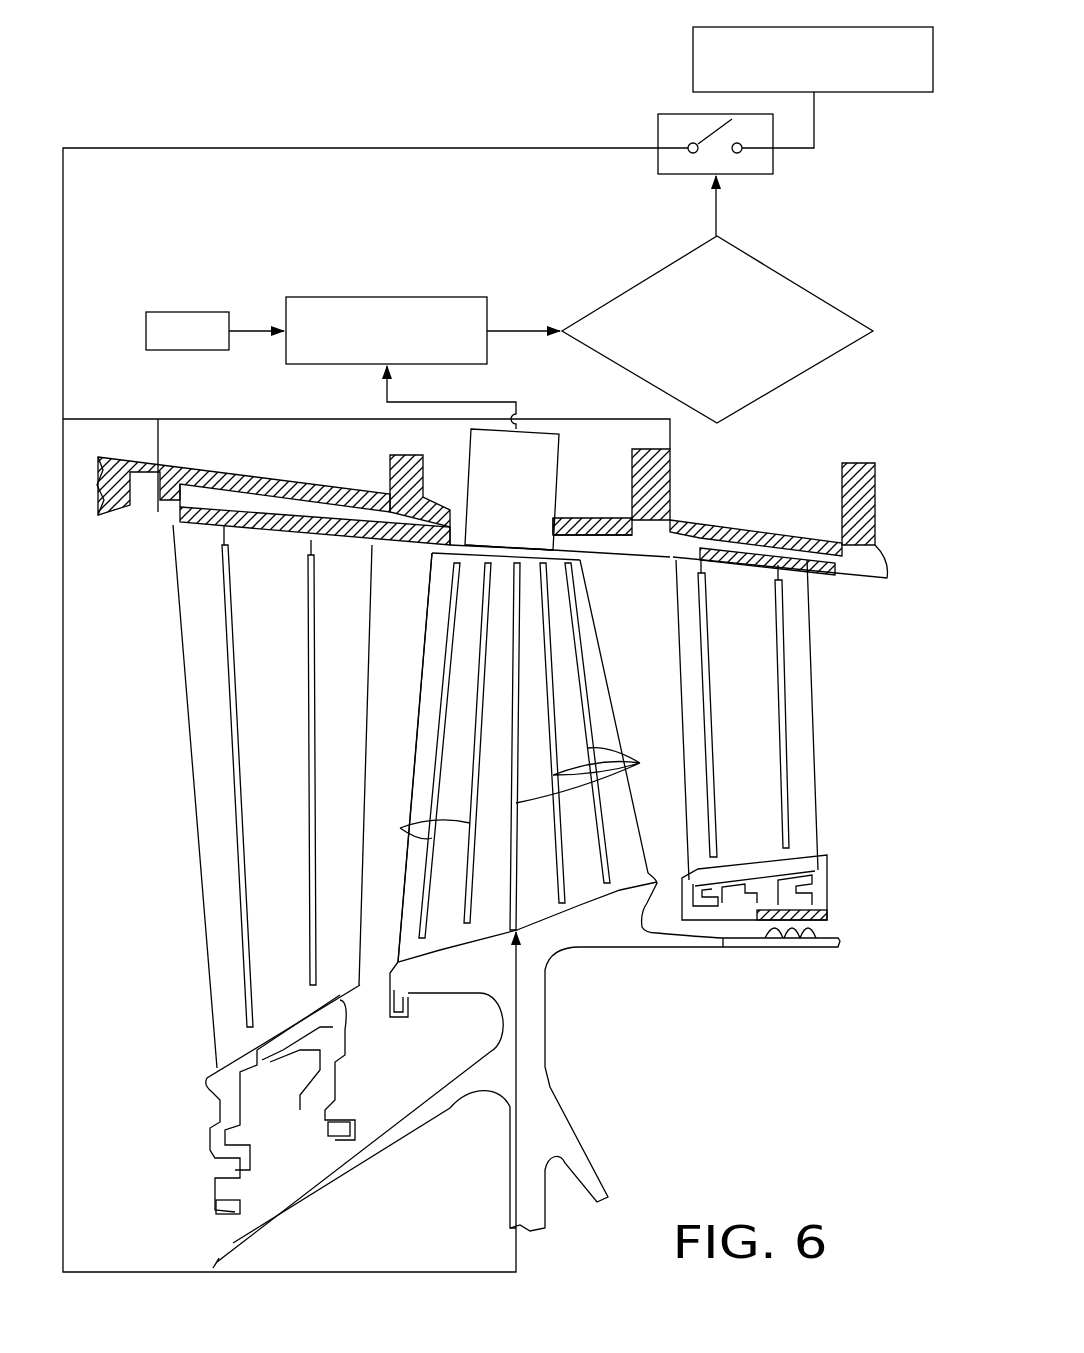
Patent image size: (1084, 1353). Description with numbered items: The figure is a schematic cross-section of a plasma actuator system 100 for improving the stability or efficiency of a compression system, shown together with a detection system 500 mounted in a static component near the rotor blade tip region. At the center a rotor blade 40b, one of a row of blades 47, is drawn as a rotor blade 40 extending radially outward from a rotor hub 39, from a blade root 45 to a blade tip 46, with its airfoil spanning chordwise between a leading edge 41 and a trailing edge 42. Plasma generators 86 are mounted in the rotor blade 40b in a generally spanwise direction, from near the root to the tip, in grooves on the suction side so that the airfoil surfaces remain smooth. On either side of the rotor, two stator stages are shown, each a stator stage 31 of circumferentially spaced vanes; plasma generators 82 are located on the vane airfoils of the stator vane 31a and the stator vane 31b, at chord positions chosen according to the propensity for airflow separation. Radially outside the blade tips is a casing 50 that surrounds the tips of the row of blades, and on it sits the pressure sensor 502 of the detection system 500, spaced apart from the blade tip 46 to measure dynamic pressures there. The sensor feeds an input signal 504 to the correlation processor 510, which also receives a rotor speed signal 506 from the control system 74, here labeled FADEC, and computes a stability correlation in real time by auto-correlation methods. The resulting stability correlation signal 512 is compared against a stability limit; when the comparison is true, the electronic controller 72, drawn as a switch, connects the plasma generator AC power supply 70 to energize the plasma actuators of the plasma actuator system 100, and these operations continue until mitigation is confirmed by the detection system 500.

The plasma actuator system 100 is at (220, 117).
The power supply 70 is at (693, 61).
The electronic controller 72 is at (765, 163).
The control system 74 is at (826, 240).
The stability correlation signal 512 is at (716, 212).
The correlation processor 510 is at (387, 297).
The rotor speed signal 506 is at (250, 327).
The input signal 504 is at (428, 402).
The detection system 500 is at (445, 470).
The pressure sensor 502 is at (537, 467).
The casing 50 is at (392, 500).
The blade tip 46 is at (477, 553).
The rotor blade 40 is at (601, 627).
The trailing edge 42 is at (602, 671).
The leading edge 41 is at (420, 680).
The row of blades 47 is at (415, 704).
The plasma generator 86 is at (520, 794).
The stator stage 31 is at (260, 742).
The plasma generator 82 is at (315, 920).
The stator vane 31a is at (230, 1012).
The stator vane 31b is at (803, 825).
The rotor hub 39 is at (558, 938).
The blade root 45 is at (440, 955).
The rotor blade 40b is at (395, 942).